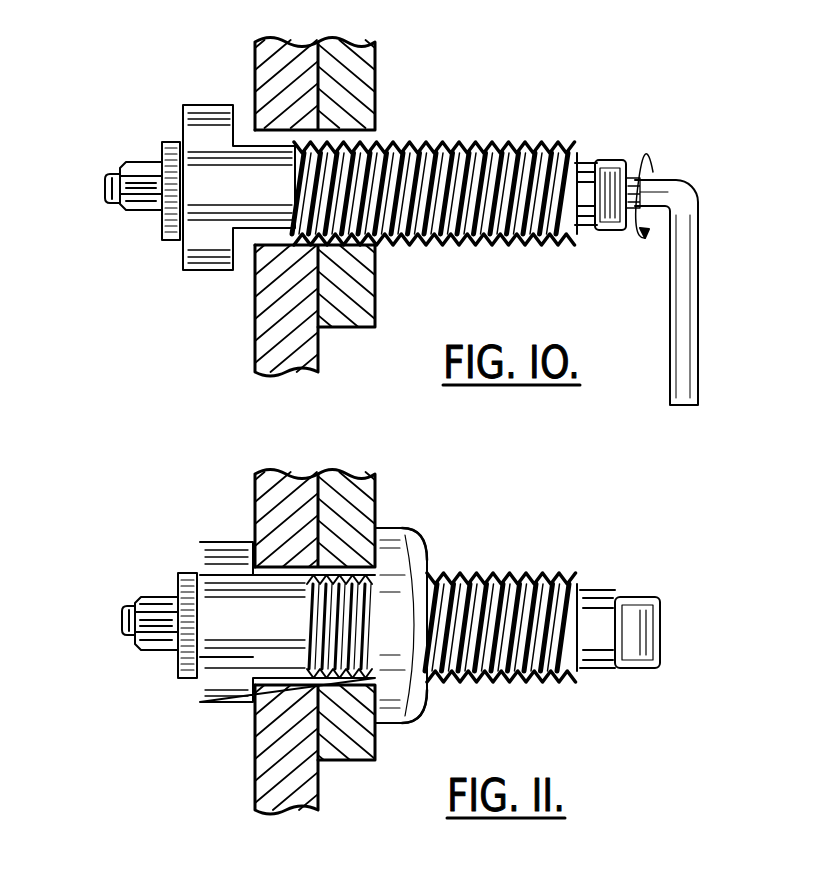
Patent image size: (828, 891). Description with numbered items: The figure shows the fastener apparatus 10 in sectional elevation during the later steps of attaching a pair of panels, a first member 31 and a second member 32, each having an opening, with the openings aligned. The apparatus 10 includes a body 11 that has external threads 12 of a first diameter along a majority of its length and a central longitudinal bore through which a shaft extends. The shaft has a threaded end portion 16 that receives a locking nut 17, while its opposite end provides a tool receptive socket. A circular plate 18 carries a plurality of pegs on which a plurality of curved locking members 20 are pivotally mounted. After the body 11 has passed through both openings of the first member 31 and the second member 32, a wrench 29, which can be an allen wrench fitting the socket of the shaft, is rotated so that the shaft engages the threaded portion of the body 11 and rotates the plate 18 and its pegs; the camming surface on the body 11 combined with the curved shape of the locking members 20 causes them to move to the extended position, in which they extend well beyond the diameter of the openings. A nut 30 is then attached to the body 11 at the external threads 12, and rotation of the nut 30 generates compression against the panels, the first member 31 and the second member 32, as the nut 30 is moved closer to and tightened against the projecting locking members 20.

In FIG. 10, the fastener apparatus 10 is at (485, 70).
In FIG. 11, the fastener apparatus 10 is at (503, 526).
In FIG. 10, the body 11 is at (470, 140).
In FIG. 11, the body 11 is at (566, 575).
In FIG. 11, the external threads 12 is at (440, 573).
In FIG. 10, the threaded end portion 16 is at (108, 185).
In FIG. 11, the threaded end portion 16 is at (123, 630).
In FIG. 10, the locking nut 17 is at (126, 206).
In FIG. 11, the locking nut 17 is at (162, 598).
In FIG. 10, the circular plate 18 is at (165, 240).
In FIG. 11, the circular plate 18 is at (186, 675).
In FIG. 10, the locking members 20 is at (205, 106).
In FIG. 11, the locking members 20 is at (218, 543).
In FIG. 10, the wrench 29 is at (690, 182).
In FIG. 11, the nut 30 is at (398, 721).
In FIG. 10, the first member 31 is at (316, 201).
In FIG. 11, the first member 31 is at (315, 635).
In FIG. 10, the second member 32 is at (255, 64).
In FIG. 11, the second member 32 is at (255, 496).